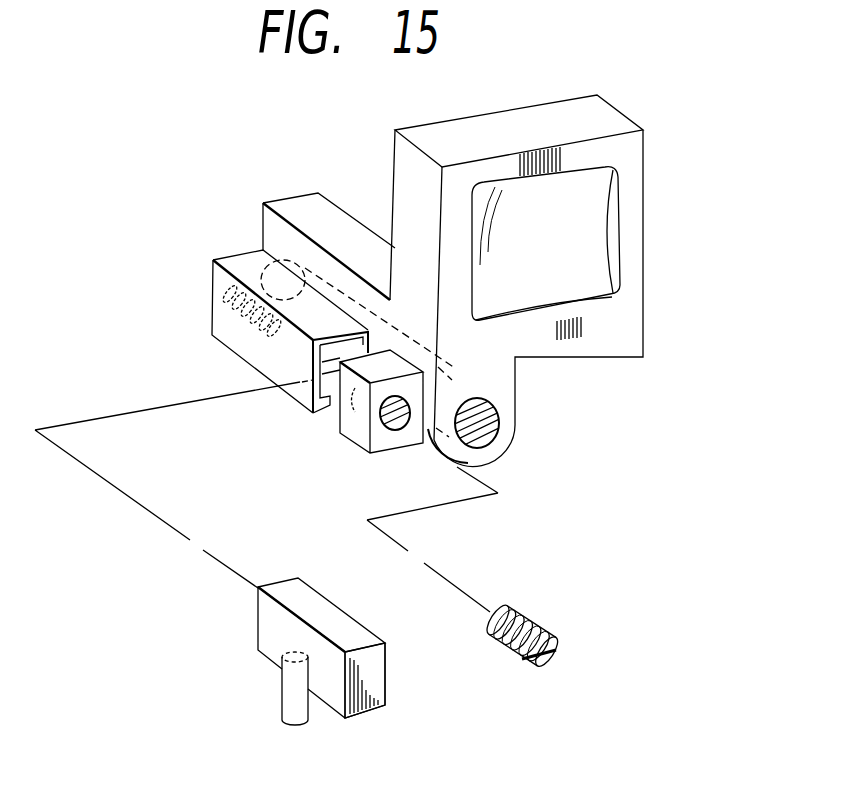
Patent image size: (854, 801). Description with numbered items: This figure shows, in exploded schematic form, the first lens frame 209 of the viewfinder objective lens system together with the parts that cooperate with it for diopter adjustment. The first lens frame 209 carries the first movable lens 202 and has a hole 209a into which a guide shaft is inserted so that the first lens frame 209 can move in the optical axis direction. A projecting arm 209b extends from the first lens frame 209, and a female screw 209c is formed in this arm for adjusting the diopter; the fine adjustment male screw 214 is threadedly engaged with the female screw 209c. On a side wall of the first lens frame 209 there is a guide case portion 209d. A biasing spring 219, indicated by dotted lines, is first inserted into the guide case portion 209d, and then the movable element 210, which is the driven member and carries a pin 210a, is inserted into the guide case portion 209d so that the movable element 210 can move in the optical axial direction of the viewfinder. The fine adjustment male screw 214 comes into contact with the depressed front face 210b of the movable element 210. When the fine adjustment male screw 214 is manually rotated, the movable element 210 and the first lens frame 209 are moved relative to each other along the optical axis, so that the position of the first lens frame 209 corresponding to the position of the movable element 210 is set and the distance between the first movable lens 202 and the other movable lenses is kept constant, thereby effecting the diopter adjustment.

The first lens frame 209 is at (478, 125).
The first movable lens 202 is at (588, 216).
The hole 209a is at (480, 428).
The projecting arm 209b is at (350, 422).
The female screw 209c is at (390, 420).
The guide case portion 209d is at (240, 263).
The biasing spring 219 is at (212, 296).
The movable element 210 is at (331, 592).
The pin 210a is at (280, 695).
The depressed front face 210b is at (372, 672).
The fine adjustment male screw 214 is at (520, 613).